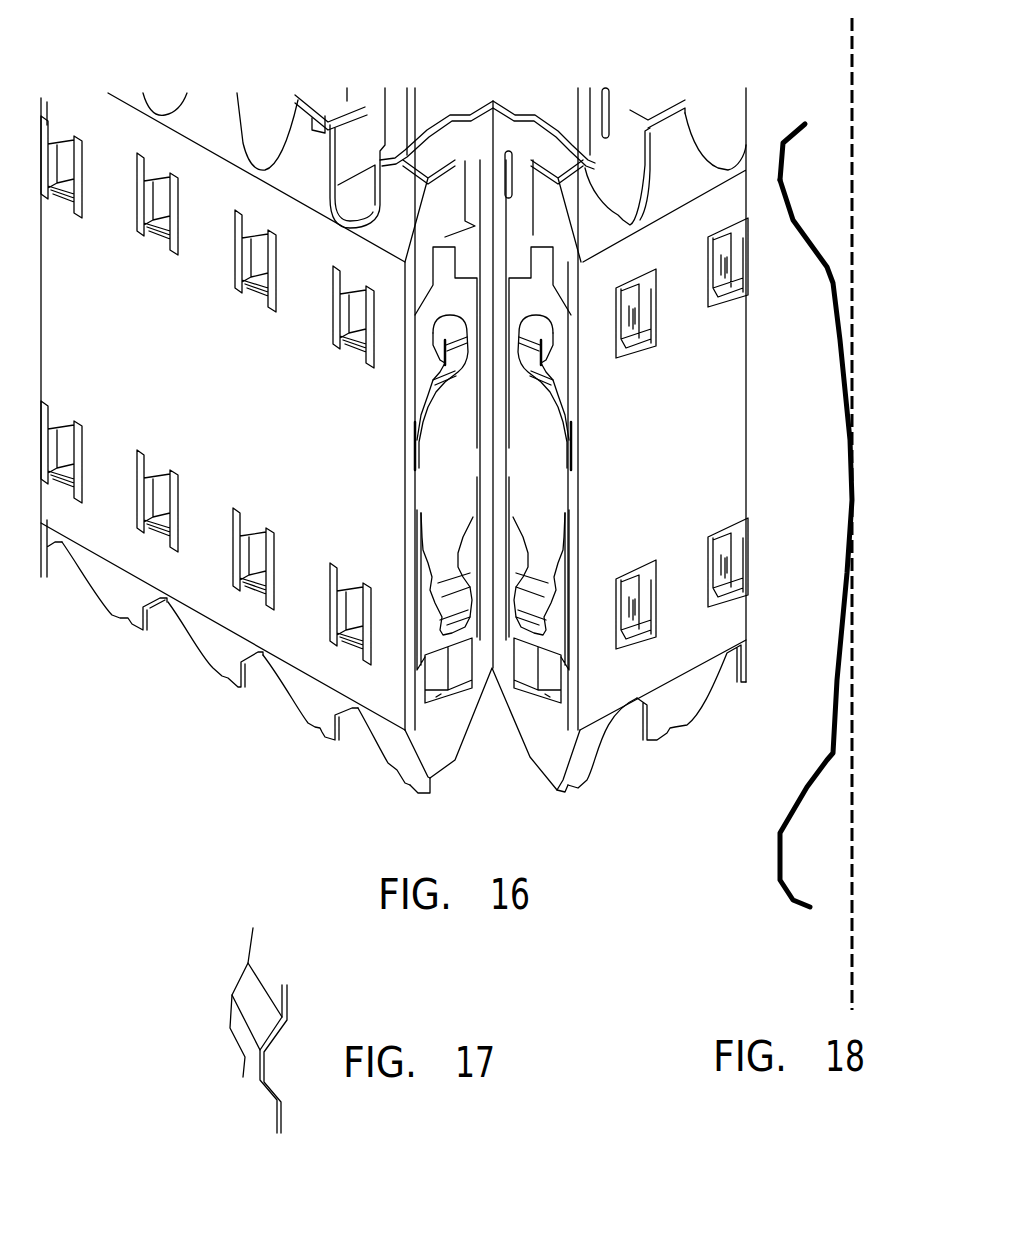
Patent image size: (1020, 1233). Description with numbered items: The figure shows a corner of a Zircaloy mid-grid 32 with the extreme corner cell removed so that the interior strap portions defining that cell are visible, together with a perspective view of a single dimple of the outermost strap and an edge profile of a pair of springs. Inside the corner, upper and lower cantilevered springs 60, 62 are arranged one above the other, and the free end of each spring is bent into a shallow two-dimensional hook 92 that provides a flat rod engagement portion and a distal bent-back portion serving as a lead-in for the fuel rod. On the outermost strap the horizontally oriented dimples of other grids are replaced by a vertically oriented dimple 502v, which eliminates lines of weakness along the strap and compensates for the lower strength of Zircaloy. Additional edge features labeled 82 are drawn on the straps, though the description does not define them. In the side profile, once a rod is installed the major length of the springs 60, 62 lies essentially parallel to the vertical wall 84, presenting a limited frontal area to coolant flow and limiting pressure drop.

In FIG. 16, the mid-grid 32 is at (238, 745).
In FIG. 16, the upper spring 60 is at (496, 348).
In FIG. 18, the upper spring 60 is at (795, 60).
In FIG. 16, the lower spring 62 is at (533, 575).
In FIG. 16, the edge tab 82 is at (300, 131).
In FIG. 18, the vertical wall 84 is at (853, 128).
In FIG. 16, the hook 92 is at (530, 318).
In FIG. 18, the hook 92 is at (783, 213).
In FIG. 16, the vertically oriented dimple 502v is at (78, 648).
In FIG. 17, the vertically oriented dimple 502v is at (200, 1023).